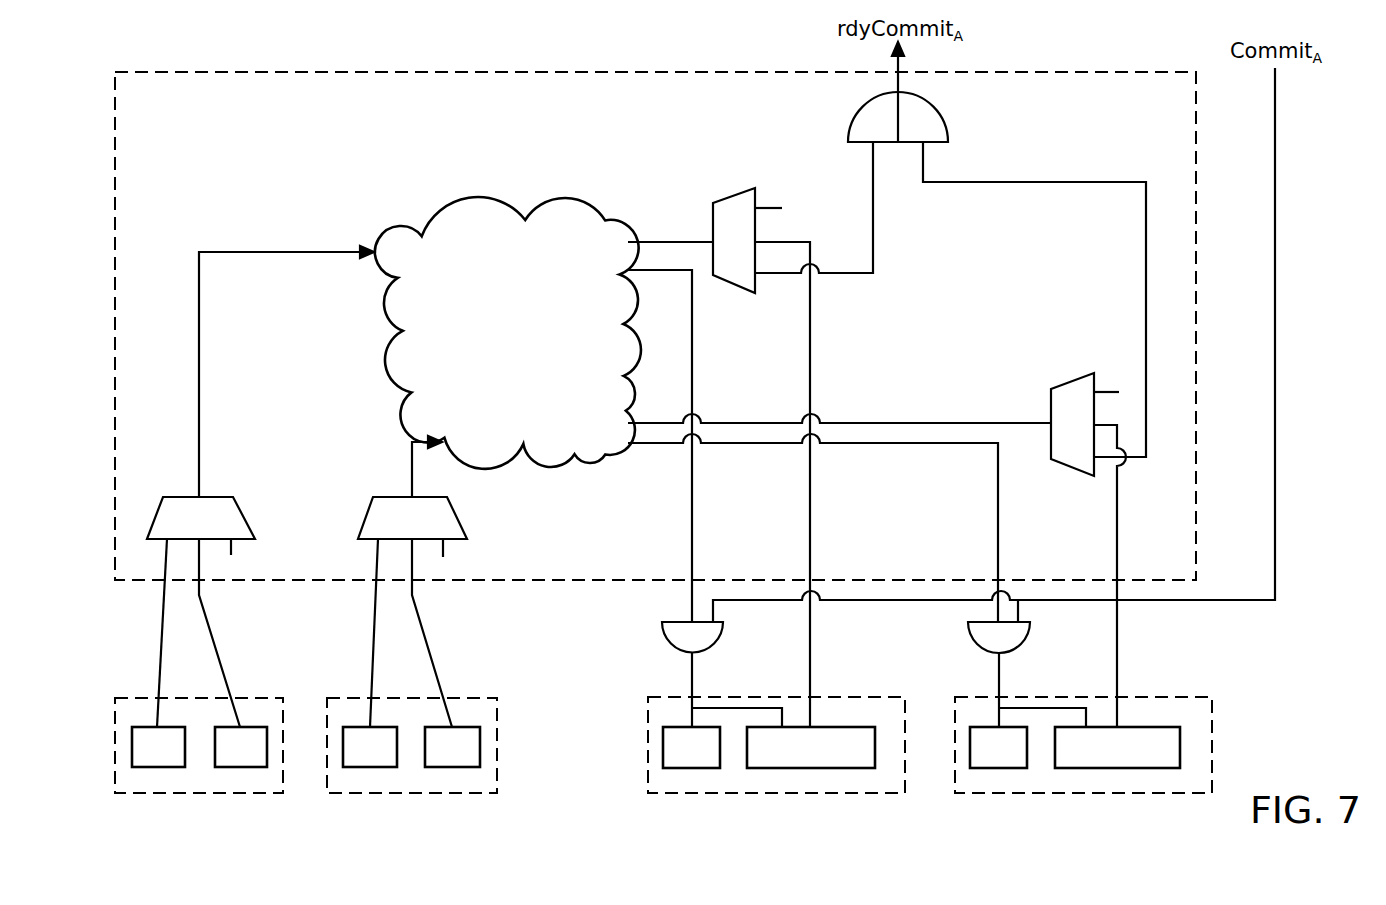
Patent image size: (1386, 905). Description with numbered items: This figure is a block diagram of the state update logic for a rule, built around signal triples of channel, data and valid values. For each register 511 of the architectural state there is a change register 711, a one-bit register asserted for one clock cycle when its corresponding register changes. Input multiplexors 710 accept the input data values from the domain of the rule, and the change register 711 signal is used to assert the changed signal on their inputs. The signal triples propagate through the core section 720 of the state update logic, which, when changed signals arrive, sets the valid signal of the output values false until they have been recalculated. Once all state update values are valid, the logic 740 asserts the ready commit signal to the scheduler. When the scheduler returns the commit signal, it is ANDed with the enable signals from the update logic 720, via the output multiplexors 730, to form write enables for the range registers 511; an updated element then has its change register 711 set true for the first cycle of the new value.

The input multiplexor 710 is at (233, 497).
The core section 720 is at (625, 409).
The input multiplexer/demultiplexer 730 is at (713, 216).
The logic 740 is at (945, 143).
The change register 711 is at (157, 767).
The memory element 511 is at (240, 767).